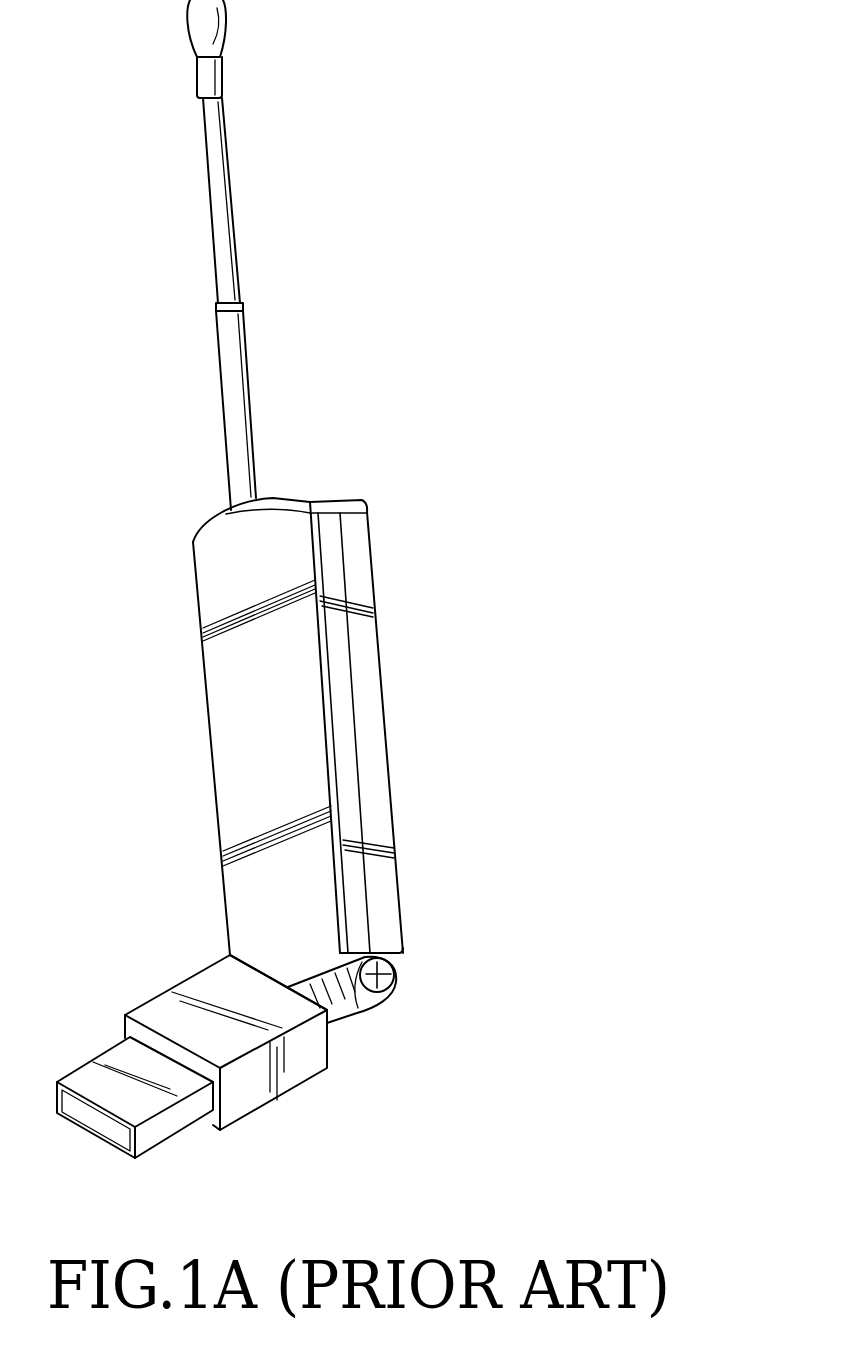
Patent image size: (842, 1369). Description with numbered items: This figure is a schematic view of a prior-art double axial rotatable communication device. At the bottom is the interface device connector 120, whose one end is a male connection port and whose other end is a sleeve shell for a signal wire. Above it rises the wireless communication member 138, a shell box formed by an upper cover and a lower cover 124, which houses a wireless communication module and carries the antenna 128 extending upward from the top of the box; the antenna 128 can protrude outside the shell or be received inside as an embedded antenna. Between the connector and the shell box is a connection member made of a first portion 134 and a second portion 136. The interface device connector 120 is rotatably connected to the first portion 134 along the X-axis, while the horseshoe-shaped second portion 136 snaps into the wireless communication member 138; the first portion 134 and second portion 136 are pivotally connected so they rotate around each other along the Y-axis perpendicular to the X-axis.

The interface device connector 120 is at (187, 1012).
The lower cover 124 is at (248, 705).
The antenna 128 is at (222, 240).
The first portion 134 is at (362, 1012).
The second portion 136 is at (394, 980).
The wireless communication member 138 is at (363, 630).